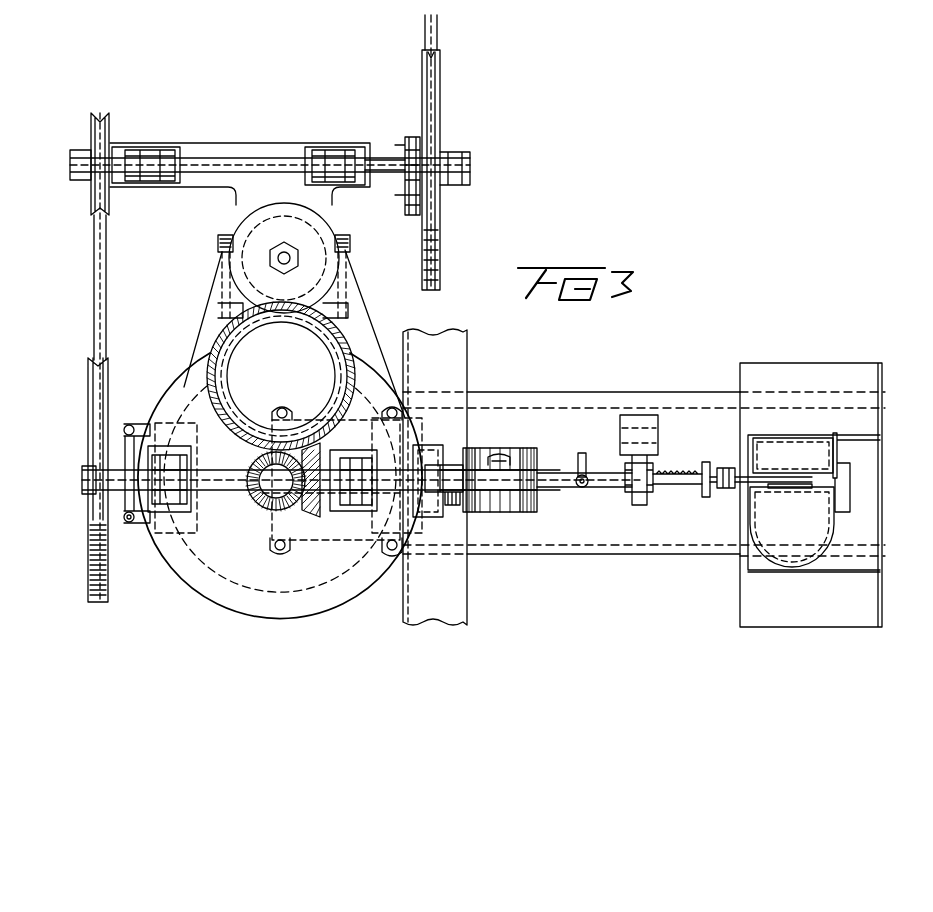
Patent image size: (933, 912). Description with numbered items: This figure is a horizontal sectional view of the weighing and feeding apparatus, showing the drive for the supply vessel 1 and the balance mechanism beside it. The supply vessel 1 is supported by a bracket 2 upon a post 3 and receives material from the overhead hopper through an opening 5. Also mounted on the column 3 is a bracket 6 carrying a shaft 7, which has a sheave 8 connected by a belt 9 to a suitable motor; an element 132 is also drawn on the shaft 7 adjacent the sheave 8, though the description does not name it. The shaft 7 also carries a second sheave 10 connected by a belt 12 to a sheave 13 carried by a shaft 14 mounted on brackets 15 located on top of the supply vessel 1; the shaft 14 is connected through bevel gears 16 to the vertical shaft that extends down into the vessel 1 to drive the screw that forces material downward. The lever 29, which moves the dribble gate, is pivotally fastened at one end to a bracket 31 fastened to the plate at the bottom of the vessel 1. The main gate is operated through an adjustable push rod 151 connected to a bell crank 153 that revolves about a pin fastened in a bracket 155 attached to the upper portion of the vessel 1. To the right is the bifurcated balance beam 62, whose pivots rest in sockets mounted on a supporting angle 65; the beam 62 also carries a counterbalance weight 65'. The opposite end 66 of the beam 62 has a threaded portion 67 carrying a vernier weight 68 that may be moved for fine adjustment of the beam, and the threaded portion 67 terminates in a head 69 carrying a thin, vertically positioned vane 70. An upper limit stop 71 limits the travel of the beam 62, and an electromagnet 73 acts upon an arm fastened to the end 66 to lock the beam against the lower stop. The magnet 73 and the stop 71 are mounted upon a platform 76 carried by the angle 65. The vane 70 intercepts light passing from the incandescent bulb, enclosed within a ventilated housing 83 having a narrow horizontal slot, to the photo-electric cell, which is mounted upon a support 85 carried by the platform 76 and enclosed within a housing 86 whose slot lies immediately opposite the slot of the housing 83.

The supply vessel 1 is at (218, 600).
The bracket 2 is at (350, 338).
The post 3 is at (332, 230).
The opening 5 is at (345, 358).
The bracket 6 is at (212, 148).
The shaft 7 is at (380, 160).
The sheave 8 is at (441, 98).
The belt 9 is at (437, 36).
The second sheave 10 is at (109, 126).
The belt 12 is at (106, 286).
The sheave 13 is at (108, 380).
The shaft 14 is at (232, 492).
The brackets 15 is at (175, 512).
The bevel gears 16 is at (270, 510).
The lever 29 is at (129, 522).
The bracket 31 is at (150, 424).
The balance beam 62 is at (552, 478).
The supporting angle 65 is at (456, 477).
The counterbalance weight 65' is at (517, 492).
The end of the beam 66 is at (618, 480).
The threaded portion 67 is at (675, 486).
The vernier weight 68 is at (704, 498).
The head 69 is at (730, 468).
The vane 70 is at (810, 489).
The upper limit stop 71 is at (578, 490).
The electromagnet 73 is at (653, 463).
The platform 76 is at (572, 562).
The ventilated housing 83 is at (778, 562).
The support 85 is at (868, 456).
The housing 86 is at (778, 458).
The gear 132 is at (411, 136).
The adjustable push rod 151 is at (510, 458).
The bell crank 153 is at (472, 472).
The bracket 155 is at (455, 506).